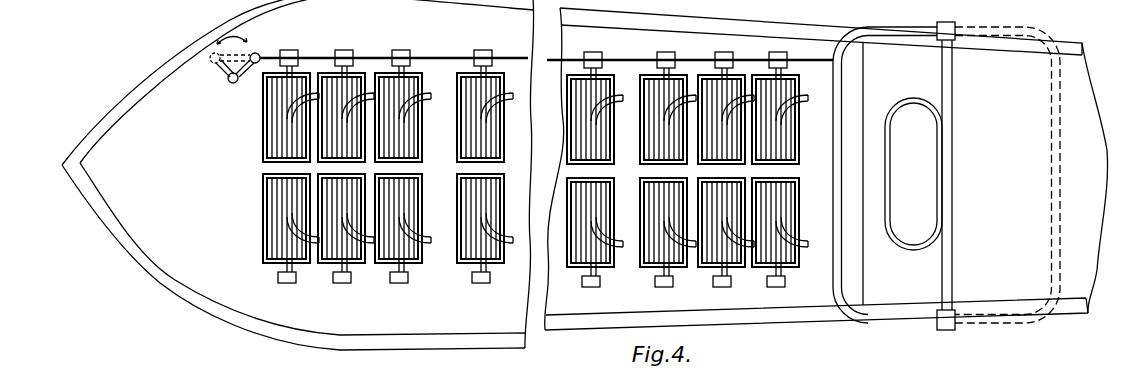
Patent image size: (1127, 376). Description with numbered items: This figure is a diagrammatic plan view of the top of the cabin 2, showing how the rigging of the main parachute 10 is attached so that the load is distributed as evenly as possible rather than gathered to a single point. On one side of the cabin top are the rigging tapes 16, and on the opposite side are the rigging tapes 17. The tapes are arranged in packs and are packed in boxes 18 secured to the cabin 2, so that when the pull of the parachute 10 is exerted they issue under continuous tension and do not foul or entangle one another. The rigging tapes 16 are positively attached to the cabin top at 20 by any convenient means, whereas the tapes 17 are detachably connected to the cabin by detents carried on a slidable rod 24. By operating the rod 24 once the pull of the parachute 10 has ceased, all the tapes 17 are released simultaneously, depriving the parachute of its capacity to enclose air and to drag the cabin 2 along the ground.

The cabin 2 is at (585, 175).
The main parachute 10 is at (421, 238).
The rigging tapes 16 is at (291, 266).
The rigging tapes 17 is at (290, 62).
The boxes 18 is at (264, 110).
The attachment point 20 is at (287, 284).
The rod 24 is at (445, 57).